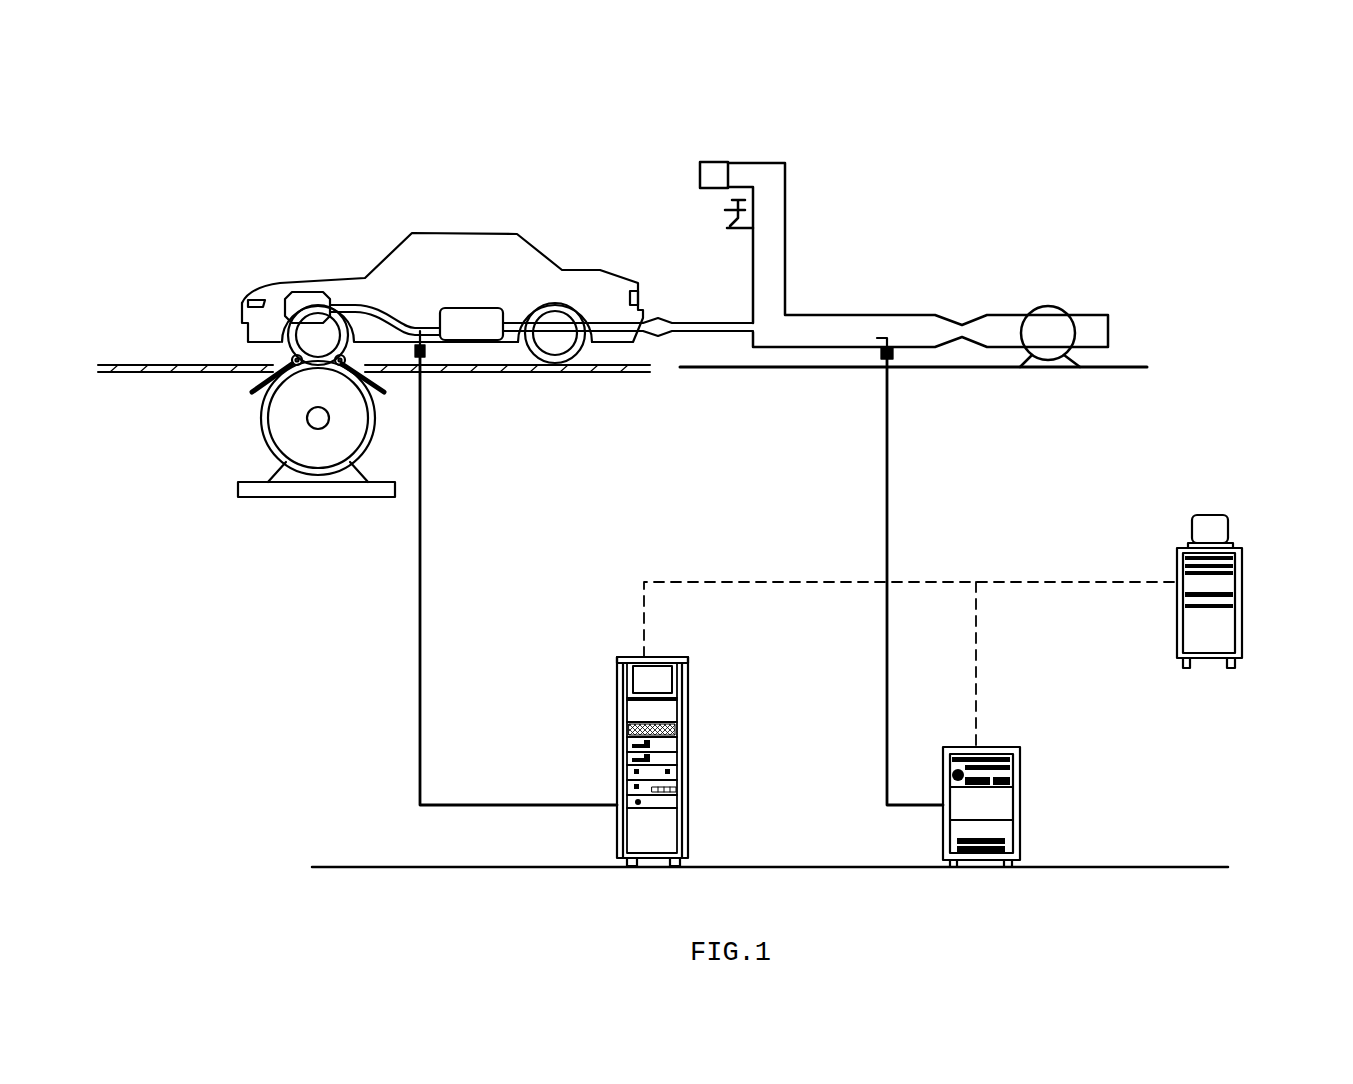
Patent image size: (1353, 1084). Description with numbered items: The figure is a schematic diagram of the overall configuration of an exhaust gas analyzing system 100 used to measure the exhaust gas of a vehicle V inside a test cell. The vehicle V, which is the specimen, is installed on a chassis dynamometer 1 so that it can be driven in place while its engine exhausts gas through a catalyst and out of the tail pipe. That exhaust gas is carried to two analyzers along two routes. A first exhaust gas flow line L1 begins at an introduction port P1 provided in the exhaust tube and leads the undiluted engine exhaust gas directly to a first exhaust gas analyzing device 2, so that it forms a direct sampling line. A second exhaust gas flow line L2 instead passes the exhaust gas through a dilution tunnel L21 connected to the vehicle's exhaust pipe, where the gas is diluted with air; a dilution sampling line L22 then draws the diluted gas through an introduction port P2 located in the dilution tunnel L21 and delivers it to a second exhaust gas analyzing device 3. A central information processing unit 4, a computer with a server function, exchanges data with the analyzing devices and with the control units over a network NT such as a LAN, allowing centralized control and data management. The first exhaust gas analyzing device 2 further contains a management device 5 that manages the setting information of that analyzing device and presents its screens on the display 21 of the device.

The exhaust gas analyzing system 100 is at (280, 208).
The vehicle V is at (463, 233).
The chassis dynamometer 1 is at (230, 392).
The introduction port P1 is at (428, 352).
The introduction port P2 is at (893, 362).
The first exhaust gas flow line L1 is at (418, 635).
The second exhaust gas flow line L2 is at (777, 480).
The dilution tunnel L21 is at (820, 347).
The dilution sampling line L22 is at (887, 463).
The first exhaust gas analyzing device 2 is at (598, 648).
The display 21 is at (633, 680).
The management device 5 is at (682, 712).
The second exhaust gas analyzing device 3 is at (1014, 740).
The central information processing unit 4 is at (1250, 546).
The network NT is at (910, 651).